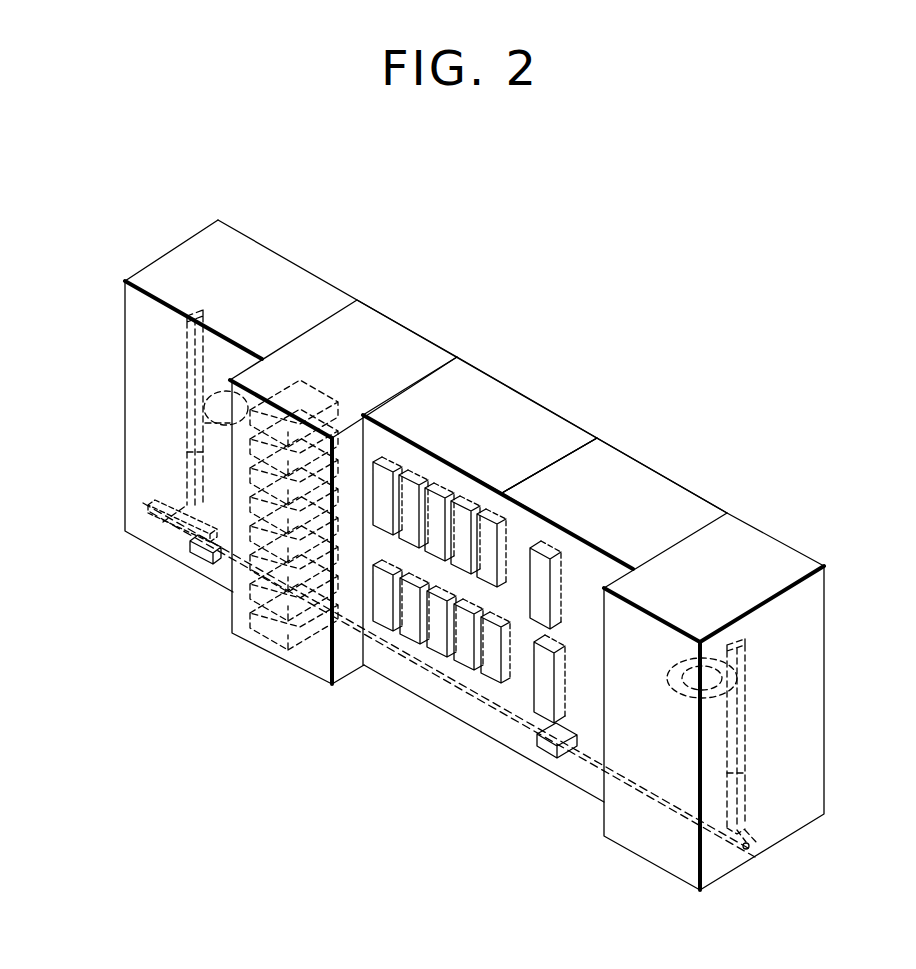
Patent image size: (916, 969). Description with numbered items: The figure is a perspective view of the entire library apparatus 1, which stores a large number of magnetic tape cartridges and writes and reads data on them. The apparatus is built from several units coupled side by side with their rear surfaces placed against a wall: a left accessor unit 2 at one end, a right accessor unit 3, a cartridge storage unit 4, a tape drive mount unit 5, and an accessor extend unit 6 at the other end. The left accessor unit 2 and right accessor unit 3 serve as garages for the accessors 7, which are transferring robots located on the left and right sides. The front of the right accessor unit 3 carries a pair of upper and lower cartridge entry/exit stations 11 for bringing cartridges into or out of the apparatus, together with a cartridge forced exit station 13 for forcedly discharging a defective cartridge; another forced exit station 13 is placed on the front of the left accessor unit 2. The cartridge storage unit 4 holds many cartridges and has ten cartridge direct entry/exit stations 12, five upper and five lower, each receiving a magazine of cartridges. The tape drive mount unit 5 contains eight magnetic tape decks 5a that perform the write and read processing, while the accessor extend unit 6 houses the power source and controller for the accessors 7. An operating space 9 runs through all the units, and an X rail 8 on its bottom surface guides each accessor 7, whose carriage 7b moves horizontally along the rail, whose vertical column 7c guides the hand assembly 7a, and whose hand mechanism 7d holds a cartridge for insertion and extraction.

The library apparatus 1 is at (481, 322).
The left accessor unit (LAU) 2 is at (270, 266).
The right accessor unit (RAU) 3 is at (678, 496).
The cartridge storage unit (CSU) 4 is at (560, 438).
The tape drive mount unit (TMU) 5 is at (404, 346).
The magnetic tape deck 5a is at (325, 375).
The accessor extend unit (AEU) 6 is at (779, 551).
The accessor 7 is at (183, 338).
The hand assembly 7a is at (213, 387).
The carriage 7b is at (165, 522).
The vertical column 7c is at (188, 452).
The hand mechanism 7d is at (188, 423).
The X rail 8 is at (637, 757).
The operating space (accessor passage) 9 is at (592, 792).
The cartridge entry/exit station (CAS) 11 is at (541, 548).
The cartridge direct entry/exit station (DEE) 12 is at (410, 486).
The cartridge forced exit station (FES) 13 is at (194, 550).